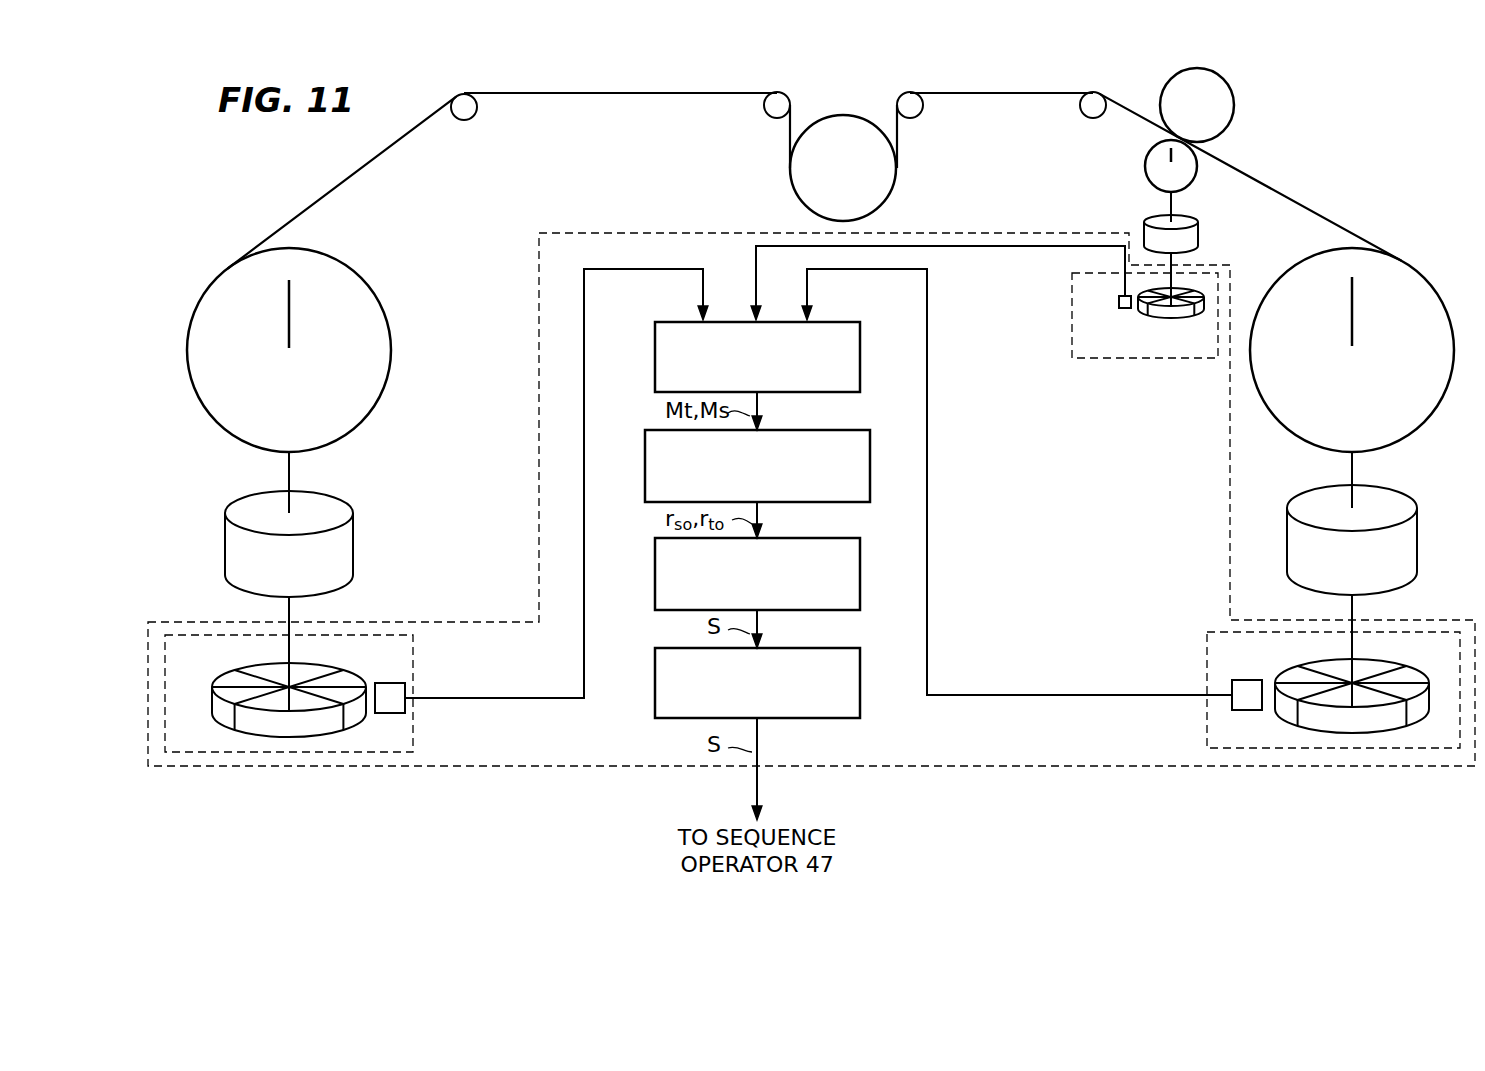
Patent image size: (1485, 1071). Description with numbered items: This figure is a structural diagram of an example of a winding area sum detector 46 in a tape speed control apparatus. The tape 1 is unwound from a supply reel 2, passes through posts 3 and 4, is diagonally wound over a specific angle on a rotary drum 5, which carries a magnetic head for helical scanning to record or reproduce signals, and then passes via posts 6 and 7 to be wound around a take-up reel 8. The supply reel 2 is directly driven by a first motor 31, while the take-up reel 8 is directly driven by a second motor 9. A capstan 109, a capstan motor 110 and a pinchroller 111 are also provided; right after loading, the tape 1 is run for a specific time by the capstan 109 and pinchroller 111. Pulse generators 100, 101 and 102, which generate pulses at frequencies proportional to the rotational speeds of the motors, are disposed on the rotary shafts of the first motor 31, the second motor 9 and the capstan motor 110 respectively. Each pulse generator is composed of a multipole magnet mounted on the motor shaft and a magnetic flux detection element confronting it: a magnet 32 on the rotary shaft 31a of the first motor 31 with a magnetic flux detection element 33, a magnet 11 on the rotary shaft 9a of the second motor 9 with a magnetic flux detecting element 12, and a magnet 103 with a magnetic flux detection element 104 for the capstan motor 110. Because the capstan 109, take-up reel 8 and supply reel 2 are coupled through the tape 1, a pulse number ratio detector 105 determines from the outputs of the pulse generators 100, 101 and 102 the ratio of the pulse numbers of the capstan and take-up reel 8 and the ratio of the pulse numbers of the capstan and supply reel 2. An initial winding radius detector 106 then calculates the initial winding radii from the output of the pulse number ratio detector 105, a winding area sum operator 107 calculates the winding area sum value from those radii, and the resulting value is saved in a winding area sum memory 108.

The tape 1 is at (606, 94).
The supply reel 2 is at (330, 268).
The post 3 is at (460, 121).
The post 4 is at (773, 118).
The rotary drum 5 is at (878, 168).
The post 6 is at (910, 112).
The post 7 is at (1087, 115).
The take-up reel 8 is at (1288, 270).
The second motor 9 is at (1398, 502).
The rotary shaft 9a is at (1352, 613).
The magnet 11 is at (1400, 668).
The magnetic flux detecting element 12 is at (1252, 685).
The first motor 31 is at (330, 498).
The rotary shaft 31a is at (288, 617).
The magnet 32 is at (226, 676).
The magnetic flux detection element 33 is at (392, 690).
The winding area sum detector 46 is at (1188, 770).
The pulse generator 100 is at (420, 712).
The pulse generator 101 is at (1207, 706).
The pulse generator 102 is at (1143, 362).
The magnet 103 is at (1155, 318).
The magnetic flux detection element 104 is at (1127, 310).
The pulse number ratio detector 105 is at (808, 322).
The initial winding radius detector 106 is at (808, 430).
The winding area sum operator 107 is at (808, 538).
The winding area sum memory 108 is at (808, 648).
The capstan 109 is at (1148, 170).
The capstan motor 110 is at (1190, 240).
The pinchroller 111 is at (1182, 83).